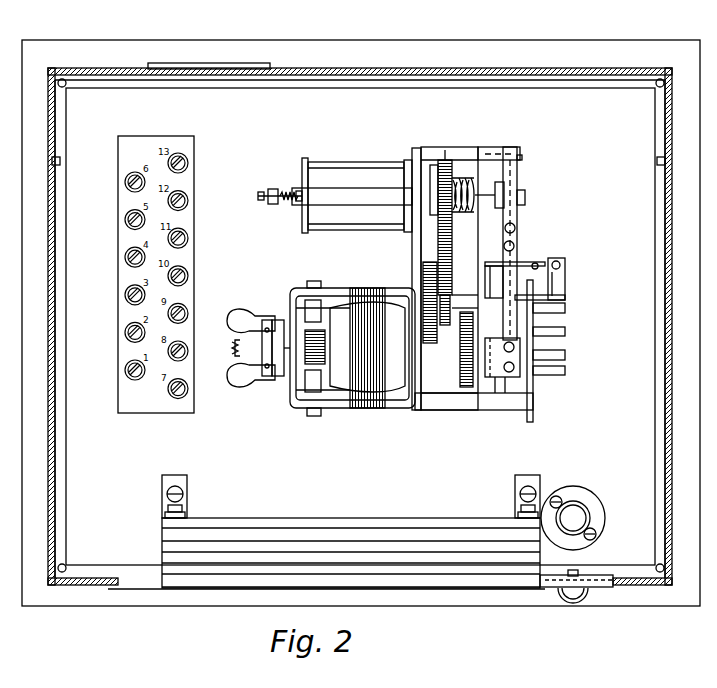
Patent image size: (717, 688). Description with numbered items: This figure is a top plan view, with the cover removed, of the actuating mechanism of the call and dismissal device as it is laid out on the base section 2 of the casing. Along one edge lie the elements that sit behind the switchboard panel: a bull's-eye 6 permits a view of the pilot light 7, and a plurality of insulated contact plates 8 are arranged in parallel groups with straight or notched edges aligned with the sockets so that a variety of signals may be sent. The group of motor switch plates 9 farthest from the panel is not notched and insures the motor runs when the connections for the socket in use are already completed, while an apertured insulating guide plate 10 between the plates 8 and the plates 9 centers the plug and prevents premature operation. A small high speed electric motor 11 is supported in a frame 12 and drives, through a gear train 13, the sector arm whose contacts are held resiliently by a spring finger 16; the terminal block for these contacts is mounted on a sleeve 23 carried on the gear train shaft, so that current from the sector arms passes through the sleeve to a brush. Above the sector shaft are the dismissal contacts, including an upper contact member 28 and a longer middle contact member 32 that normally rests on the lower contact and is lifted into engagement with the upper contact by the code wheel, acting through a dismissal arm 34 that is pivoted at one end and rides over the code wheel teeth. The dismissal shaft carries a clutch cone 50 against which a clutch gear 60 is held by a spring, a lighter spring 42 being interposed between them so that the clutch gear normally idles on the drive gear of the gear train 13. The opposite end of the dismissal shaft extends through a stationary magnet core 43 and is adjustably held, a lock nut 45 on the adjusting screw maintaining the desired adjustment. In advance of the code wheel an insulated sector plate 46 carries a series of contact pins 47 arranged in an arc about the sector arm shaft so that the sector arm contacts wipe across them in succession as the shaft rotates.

The base section 2 is at (602, 46).
The bull's-eye 6 is at (577, 597).
The pilot light 7 is at (575, 508).
The contact plates 8 is at (277, 568).
The motor switch plates 9 is at (425, 522).
The insulating guide plate 10 is at (328, 535).
The electric motor 11 is at (352, 361).
The frame 12 is at (446, 400).
The gear train 13 is at (451, 325).
The spring finger 16 is at (560, 278).
The sleeve 23 is at (522, 268).
The upper contact member 28 is at (513, 280).
The middle contact member 32 is at (517, 236).
The dismissal arm 34 is at (516, 178).
The lighter spring 42 is at (452, 240).
The stationary magnet core 43 is at (365, 166).
The lock nut 45 is at (297, 192).
The insulated sector plate 46 is at (533, 391).
The contact pins 47 is at (565, 308).
The clutch cone 50 is at (434, 170).
The clutch gear 60 is at (452, 170).